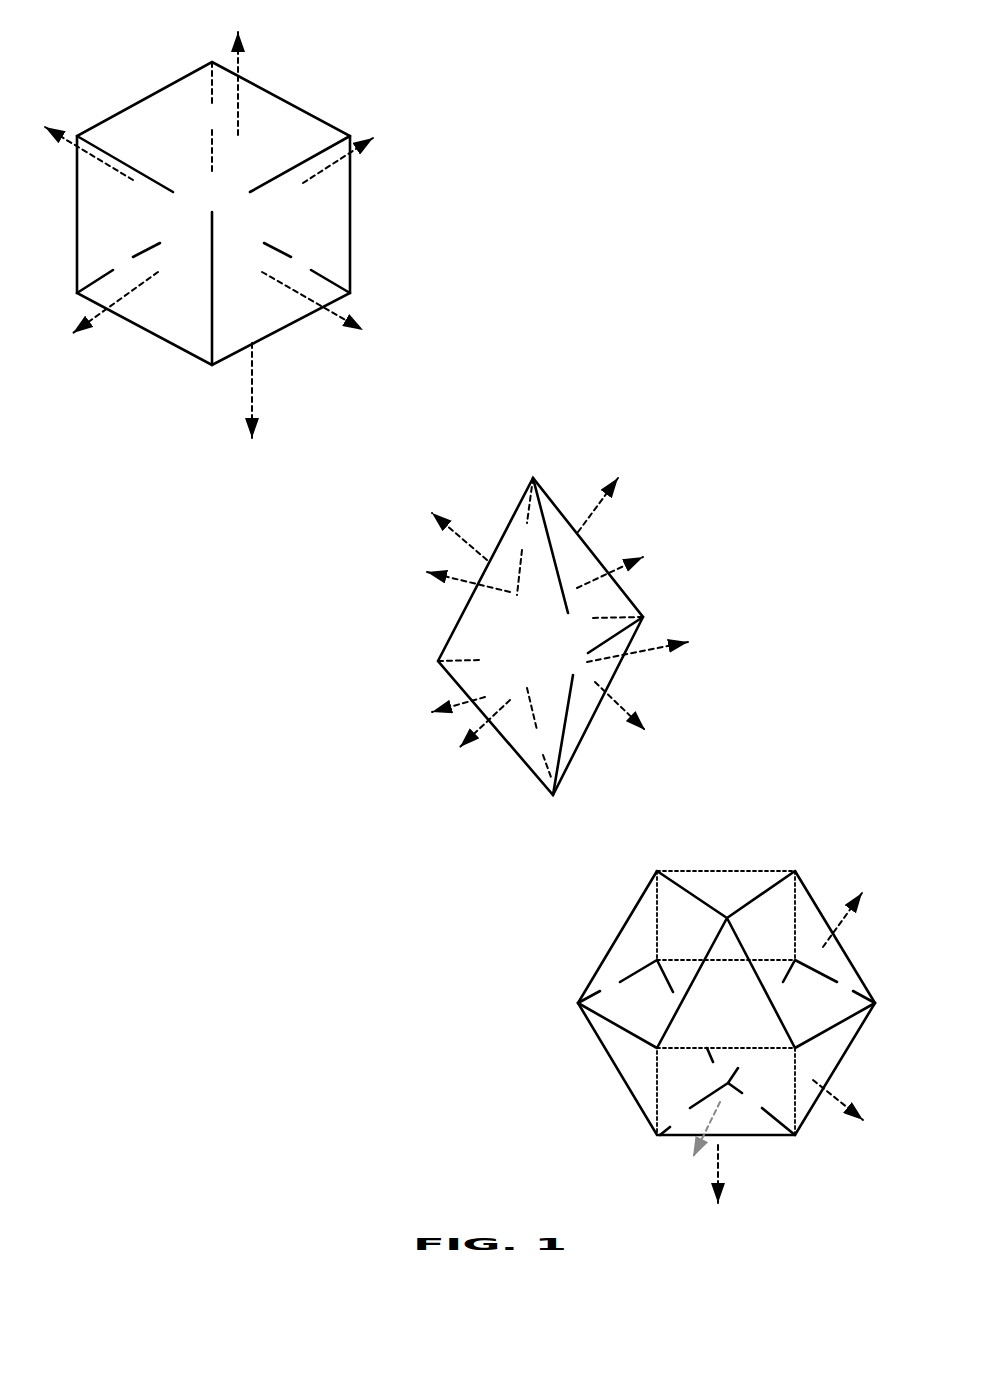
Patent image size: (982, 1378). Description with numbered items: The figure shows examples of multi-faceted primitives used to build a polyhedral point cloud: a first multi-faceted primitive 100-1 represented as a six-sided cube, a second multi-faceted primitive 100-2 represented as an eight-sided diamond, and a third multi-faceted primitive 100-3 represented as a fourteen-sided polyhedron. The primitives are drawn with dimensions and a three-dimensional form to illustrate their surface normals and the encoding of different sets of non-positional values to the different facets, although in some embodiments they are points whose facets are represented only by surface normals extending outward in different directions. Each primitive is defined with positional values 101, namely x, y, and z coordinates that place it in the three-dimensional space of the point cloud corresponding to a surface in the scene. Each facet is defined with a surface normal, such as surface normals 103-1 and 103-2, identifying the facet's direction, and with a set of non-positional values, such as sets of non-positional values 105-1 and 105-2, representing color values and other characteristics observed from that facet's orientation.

The first multi-faceted primitive 100-1 is at (212, 62).
The second multi-faceted primitive 100-2 is at (533, 478).
The third multi-faceted primitive 100-3 is at (728, 880).
The positional values 101 is at (214, 210).
The surface normal 103-1 is at (342, 317).
The surface normal 103-2 is at (253, 405).
The set of non-positional values 105-1 is at (408, 336).
The set of non-positional values 105-2 is at (267, 461).